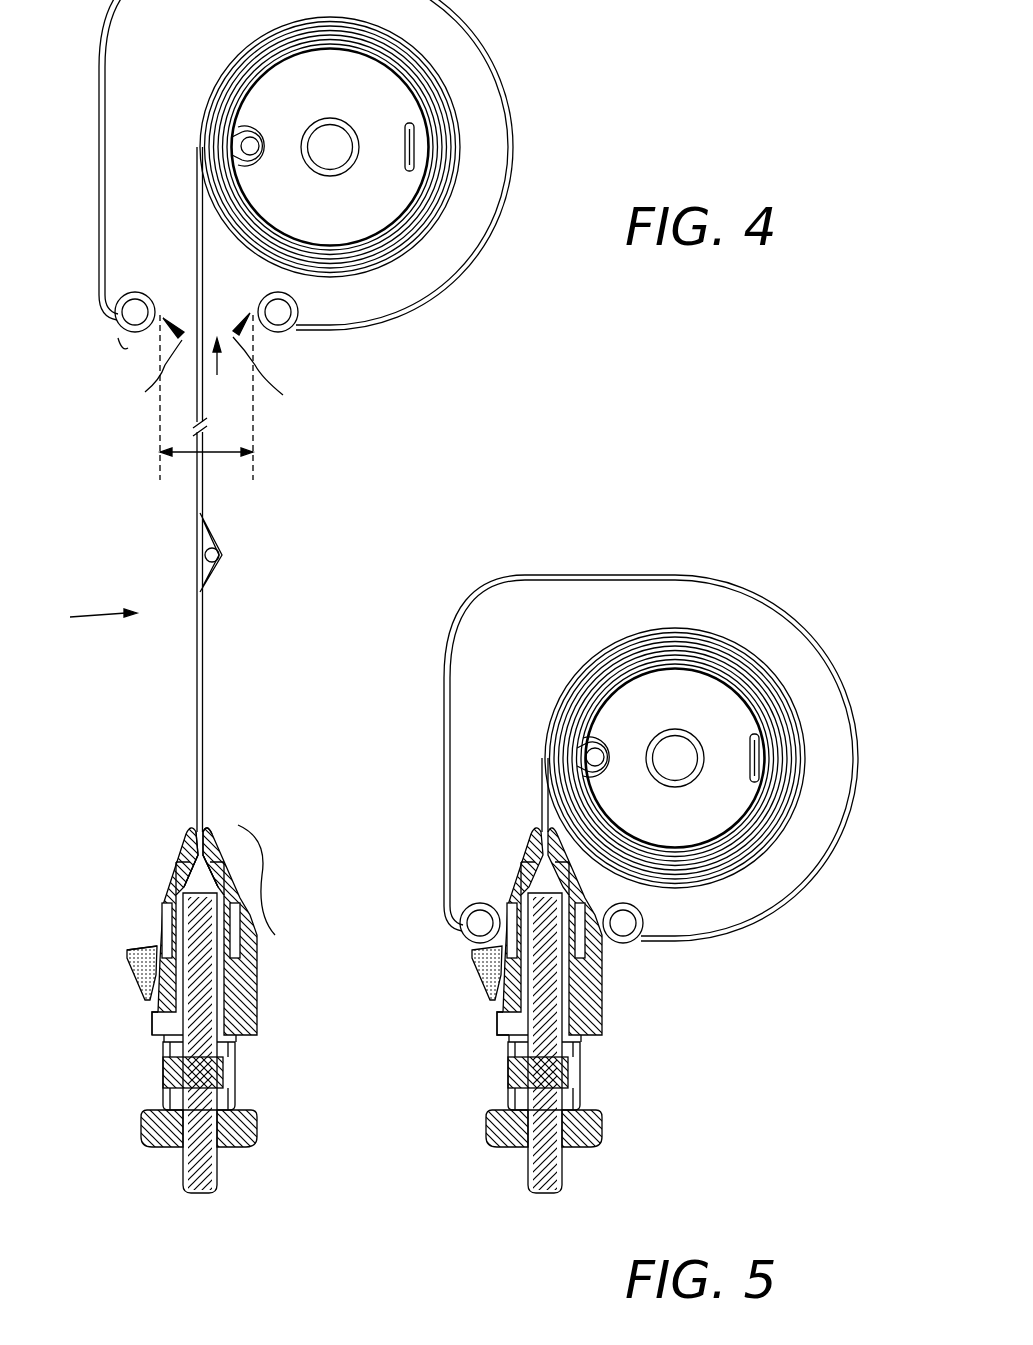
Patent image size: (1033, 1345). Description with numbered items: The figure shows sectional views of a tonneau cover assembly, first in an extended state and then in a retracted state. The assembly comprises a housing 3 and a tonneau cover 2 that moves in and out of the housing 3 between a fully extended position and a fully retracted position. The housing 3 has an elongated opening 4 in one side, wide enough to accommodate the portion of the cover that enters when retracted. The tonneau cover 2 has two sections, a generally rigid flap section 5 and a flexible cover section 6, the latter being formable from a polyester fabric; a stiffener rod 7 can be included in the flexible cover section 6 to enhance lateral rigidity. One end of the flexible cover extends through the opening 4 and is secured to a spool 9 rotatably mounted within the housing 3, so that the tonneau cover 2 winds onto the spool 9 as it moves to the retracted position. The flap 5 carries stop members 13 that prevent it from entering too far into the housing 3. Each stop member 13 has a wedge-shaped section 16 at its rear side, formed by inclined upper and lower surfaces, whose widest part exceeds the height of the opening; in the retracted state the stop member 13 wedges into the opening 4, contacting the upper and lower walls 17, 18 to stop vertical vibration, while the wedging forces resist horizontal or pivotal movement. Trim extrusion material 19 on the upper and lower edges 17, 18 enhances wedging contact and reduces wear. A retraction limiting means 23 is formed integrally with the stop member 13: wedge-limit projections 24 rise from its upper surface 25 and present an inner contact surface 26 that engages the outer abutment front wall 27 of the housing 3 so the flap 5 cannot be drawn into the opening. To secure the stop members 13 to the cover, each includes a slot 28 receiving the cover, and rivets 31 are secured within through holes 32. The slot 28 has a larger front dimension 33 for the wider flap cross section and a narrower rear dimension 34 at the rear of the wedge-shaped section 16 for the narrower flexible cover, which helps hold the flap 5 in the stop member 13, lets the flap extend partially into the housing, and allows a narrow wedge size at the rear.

In FIG. 4, the tonneau cover 2 is at (89, 615).
In FIG. 4, the housing 3 is at (505, 62).
In FIG. 5, the housing 3 is at (587, 576).
In FIG. 4, the elongated opening 4 is at (253, 395).
In FIG. 4, the rigid flap section 5 is at (190, 898).
In FIG. 5, the rigid flap section 5 is at (560, 1165).
In FIG. 4, the flexible cover section 6 is at (197, 395).
In FIG. 5, the flexible cover section 6 is at (544, 718).
In FIG. 4, the stiffener rod 7 is at (222, 555).
In FIG. 4, the spool 9 is at (264, 66).
In FIG. 5, the spool 9 is at (742, 692).
In FIG. 4, the stop member 13 is at (265, 993).
In FIG. 5, the stop member 13 is at (607, 1003).
In FIG. 4, the wedge-shaped section 16 is at (268, 878).
In FIG. 4, the upper wall of the opening 17 is at (145, 392).
In FIG. 4, the lower wall of the opening 18 is at (273, 366).
In FIG. 4, the trim extrusion material 19 is at (122, 340).
In FIG. 5, the trim extrusion material 19 is at (551, 923).
In FIG. 4, the retraction limiting means 23 is at (132, 993).
In FIG. 5, the retraction limiting means 23 is at (477, 978).
In FIG. 4, the wedge-limit projection 24 is at (128, 975).
In FIG. 5, the upper surface of the stop member 25 is at (498, 1025).
In FIG. 4, the inner contact surface 26 is at (138, 948).
In FIG. 4, the outer abutment front wall 27 is at (128, 348).
In FIG. 4, the slot 28 is at (95, 772).
In FIG. 4, the rivet 31 is at (178, 1068).
In FIG. 5, the rivet 31 is at (530, 1072).
In FIG. 4, the through hole 32 is at (143, 1095).
In FIG. 5, the through hole 32 is at (492, 1108).
In FIG. 4, the larger front dimension of the slot 33 is at (192, 868).
In FIG. 4, the narrower rear dimension of the slot 34 is at (200, 836).